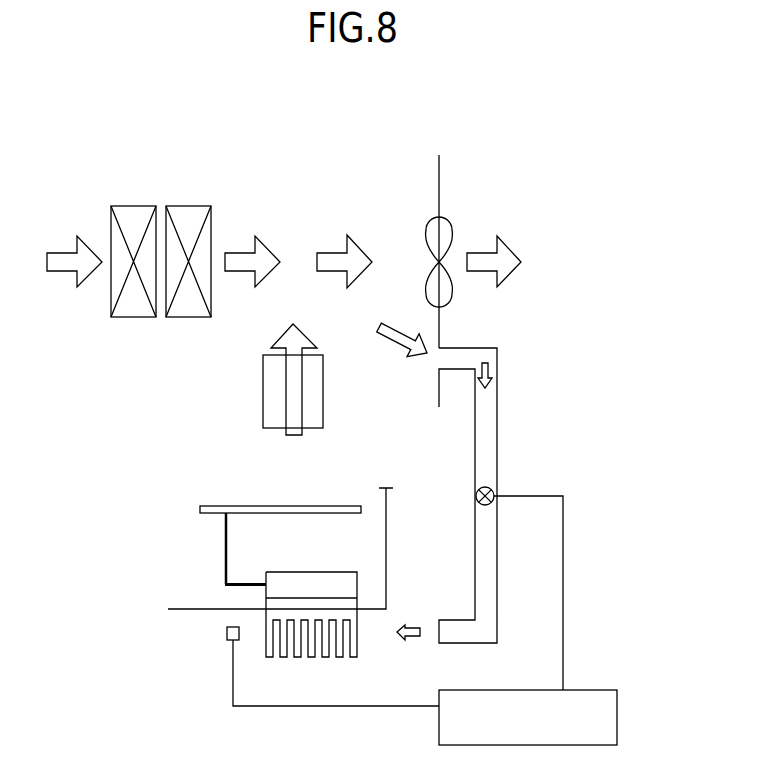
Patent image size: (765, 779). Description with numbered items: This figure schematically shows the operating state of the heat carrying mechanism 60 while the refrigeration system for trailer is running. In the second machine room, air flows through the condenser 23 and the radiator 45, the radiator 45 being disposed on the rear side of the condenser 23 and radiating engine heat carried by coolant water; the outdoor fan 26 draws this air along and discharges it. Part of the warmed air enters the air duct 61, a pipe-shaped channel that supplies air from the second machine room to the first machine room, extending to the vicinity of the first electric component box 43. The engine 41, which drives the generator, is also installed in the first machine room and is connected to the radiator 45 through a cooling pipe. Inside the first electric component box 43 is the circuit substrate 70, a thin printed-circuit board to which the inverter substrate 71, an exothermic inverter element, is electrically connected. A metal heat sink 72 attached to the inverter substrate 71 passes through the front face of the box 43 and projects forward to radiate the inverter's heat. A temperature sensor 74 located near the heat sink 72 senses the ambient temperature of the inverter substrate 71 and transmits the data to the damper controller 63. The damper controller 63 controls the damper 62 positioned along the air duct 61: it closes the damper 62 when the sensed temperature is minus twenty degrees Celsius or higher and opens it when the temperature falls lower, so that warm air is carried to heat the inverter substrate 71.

The condenser 23 is at (128, 206).
The radiator 45 is at (178, 206).
The outdoor fan 26 is at (450, 221).
The engine 41 is at (263, 390).
The circuit substrate 70 is at (256, 506).
The inverter substrate 71 is at (265, 592).
The heat sink 72 is at (357, 645).
The first electric component box 43 is at (170, 603).
The temperature sensor 74 is at (225, 633).
The heat carrying mechanism 60 is at (558, 546).
The air duct 61 is at (498, 602).
The damper 62 is at (488, 488).
The damper controller 63 is at (618, 716).